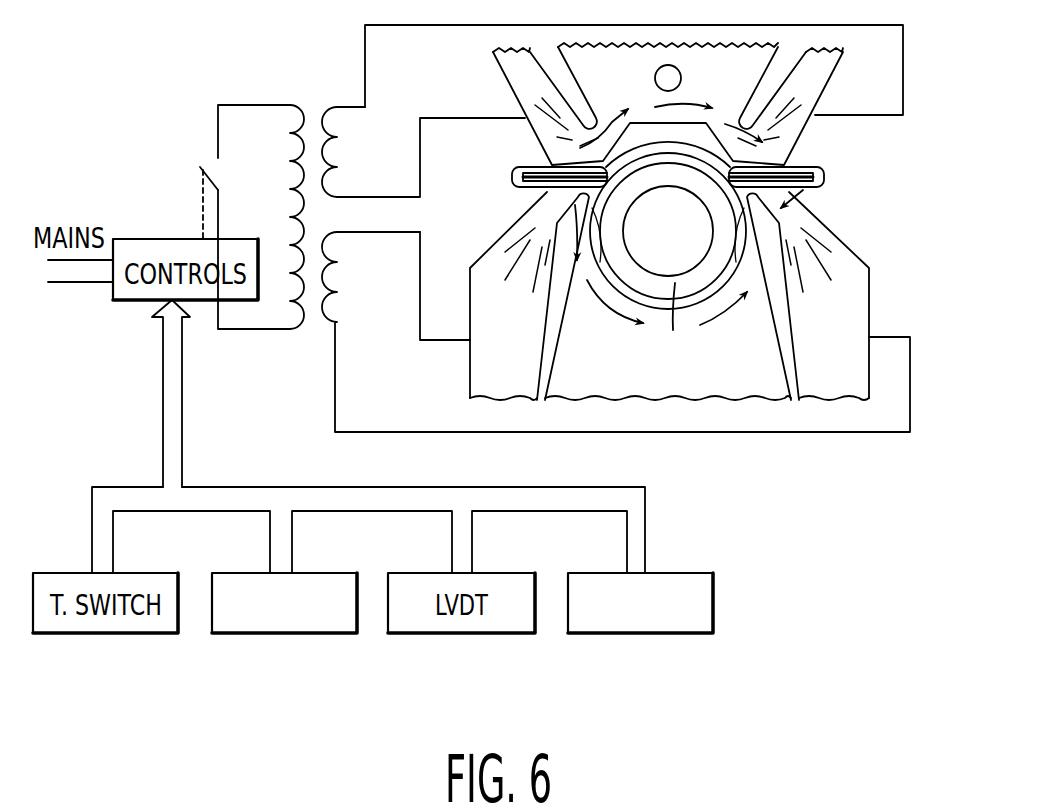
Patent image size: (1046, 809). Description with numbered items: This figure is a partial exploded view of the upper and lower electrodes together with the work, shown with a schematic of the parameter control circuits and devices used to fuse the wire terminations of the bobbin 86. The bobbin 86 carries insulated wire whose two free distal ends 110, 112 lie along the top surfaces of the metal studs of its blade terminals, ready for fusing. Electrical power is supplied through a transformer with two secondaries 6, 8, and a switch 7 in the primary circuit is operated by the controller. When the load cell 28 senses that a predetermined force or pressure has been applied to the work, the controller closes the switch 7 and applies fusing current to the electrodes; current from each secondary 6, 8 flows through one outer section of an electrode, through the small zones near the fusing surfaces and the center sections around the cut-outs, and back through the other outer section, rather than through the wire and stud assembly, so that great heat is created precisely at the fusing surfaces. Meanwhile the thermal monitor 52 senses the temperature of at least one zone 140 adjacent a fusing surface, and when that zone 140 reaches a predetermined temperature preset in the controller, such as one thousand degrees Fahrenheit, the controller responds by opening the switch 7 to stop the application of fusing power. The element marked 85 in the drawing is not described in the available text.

The secondary 6 is at (327, 147).
The switch 7 is at (207, 168).
The secondary 8 is at (332, 303).
The load cell 28 is at (652, 634).
The thermal monitor 52 is at (283, 634).
The workpiece 85 is at (683, 240).
The bobbin 86 is at (673, 330).
The free distal wire end 110 is at (513, 180).
The free distal wire end 112 is at (825, 185).
The zone 140 is at (798, 150).